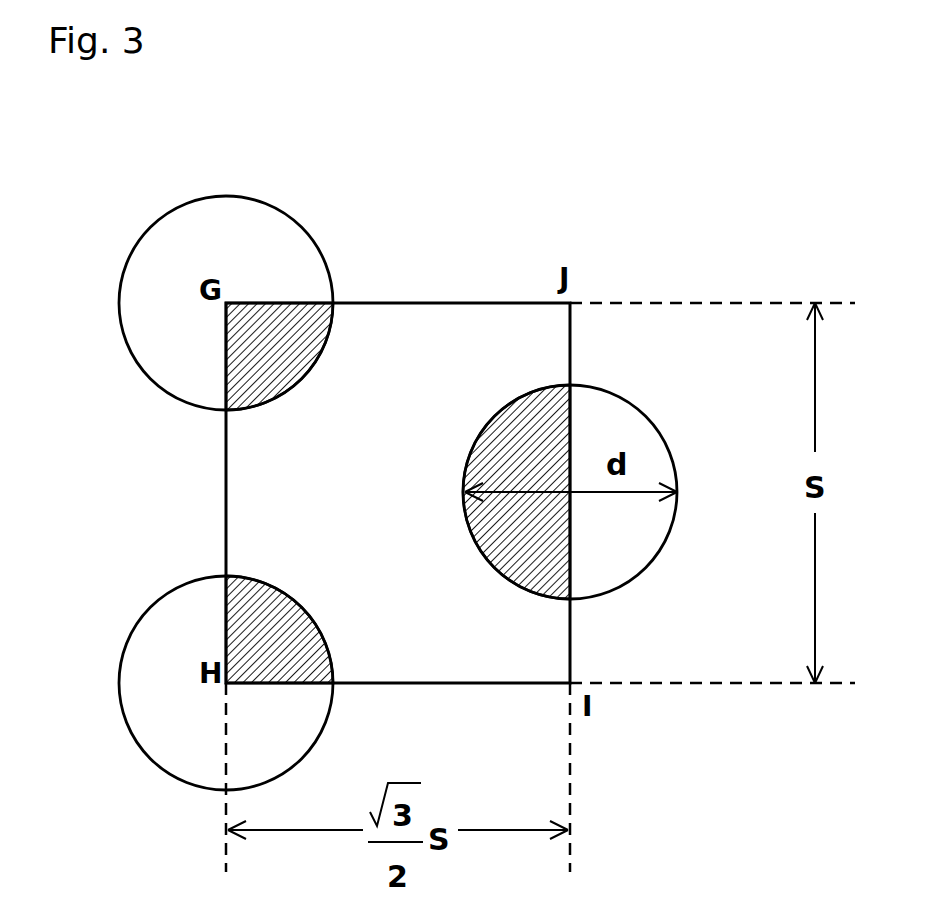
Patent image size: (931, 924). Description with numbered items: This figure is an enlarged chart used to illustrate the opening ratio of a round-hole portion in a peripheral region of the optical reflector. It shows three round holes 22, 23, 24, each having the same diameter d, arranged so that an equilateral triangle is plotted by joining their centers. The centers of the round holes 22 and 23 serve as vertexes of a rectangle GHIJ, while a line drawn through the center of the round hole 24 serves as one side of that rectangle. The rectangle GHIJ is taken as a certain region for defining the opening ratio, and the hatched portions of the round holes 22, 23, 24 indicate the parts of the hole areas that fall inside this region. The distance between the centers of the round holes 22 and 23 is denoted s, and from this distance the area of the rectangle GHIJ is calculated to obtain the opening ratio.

The round hole 22 is at (268, 217).
The round hole 23 is at (137, 577).
The round hole 24 is at (623, 395).